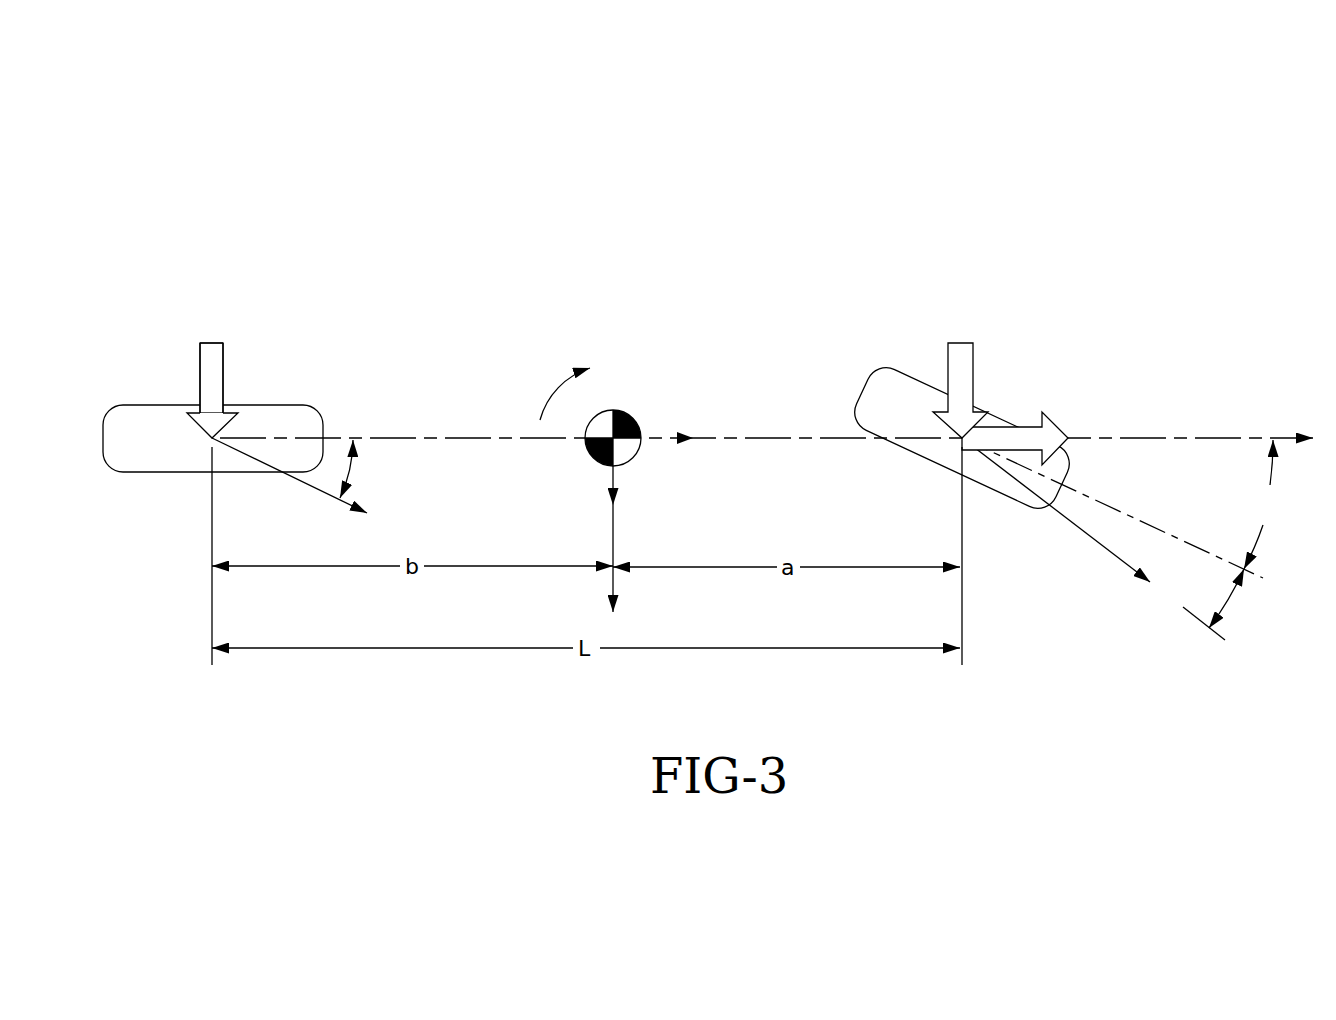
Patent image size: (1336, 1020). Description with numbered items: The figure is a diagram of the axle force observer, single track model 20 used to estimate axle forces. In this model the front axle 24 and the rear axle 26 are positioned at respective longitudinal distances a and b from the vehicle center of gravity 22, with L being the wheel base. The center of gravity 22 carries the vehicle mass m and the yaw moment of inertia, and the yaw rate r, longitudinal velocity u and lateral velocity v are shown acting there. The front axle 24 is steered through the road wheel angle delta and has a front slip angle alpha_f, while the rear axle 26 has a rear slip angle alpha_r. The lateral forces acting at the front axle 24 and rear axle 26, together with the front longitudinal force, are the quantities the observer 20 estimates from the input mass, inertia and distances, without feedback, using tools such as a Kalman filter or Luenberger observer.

The axle force observer, single track model 20 is at (647, 277).
The center of gravity 22 is at (636, 417).
The front axle 24 is at (875, 375).
The rear axle 26 is at (314, 406).